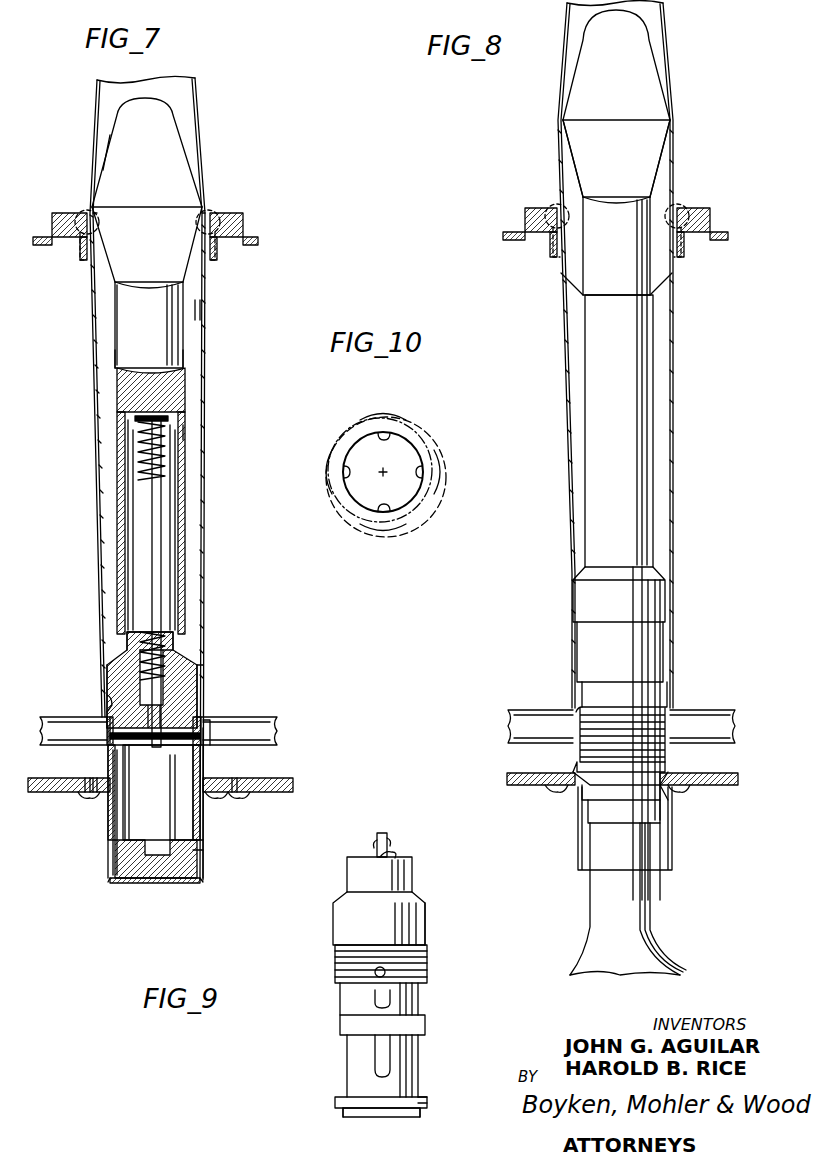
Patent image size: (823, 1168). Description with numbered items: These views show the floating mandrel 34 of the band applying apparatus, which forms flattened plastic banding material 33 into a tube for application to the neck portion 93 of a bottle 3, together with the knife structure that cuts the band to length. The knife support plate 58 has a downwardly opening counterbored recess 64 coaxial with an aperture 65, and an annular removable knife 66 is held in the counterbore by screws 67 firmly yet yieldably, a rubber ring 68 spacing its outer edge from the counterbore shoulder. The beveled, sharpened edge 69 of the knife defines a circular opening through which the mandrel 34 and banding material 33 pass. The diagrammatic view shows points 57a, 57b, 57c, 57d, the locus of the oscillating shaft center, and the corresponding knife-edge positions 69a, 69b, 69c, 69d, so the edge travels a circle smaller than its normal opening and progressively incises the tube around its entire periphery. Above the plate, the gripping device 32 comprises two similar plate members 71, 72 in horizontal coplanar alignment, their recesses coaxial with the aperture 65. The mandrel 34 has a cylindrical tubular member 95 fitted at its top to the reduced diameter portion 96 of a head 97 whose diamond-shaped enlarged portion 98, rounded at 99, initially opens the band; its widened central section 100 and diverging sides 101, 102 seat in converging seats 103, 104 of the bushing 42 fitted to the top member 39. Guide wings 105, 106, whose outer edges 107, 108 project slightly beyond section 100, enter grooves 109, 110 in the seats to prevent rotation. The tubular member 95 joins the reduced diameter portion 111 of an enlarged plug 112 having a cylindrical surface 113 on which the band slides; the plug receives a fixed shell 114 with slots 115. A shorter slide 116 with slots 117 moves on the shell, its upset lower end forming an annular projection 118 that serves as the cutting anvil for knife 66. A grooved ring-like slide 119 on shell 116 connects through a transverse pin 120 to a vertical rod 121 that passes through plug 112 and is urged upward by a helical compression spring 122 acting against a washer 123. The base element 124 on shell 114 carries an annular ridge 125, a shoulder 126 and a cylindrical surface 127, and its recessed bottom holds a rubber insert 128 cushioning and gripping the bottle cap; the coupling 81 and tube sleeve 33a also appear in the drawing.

In FIG. 8, the bottle 3 is at (692, 950).
In FIG. 7, the gripping device 32 is at (281, 736).
In FIG. 7, the banding material 33 is at (205, 500).
In FIG. 8, the banding material 33 is at (675, 360).
In FIG. 8, the tube sleeve 33a is at (575, 858).
In FIG. 7, the mandrel 34 is at (196, 472).
In FIG. 7, the top member 39 is at (258, 241).
In FIG. 7, the bushing 42 is at (243, 222).
In FIG. 7, the plate 58 is at (35, 782).
In FIG. 8, the plate 58 is at (622, 782).
In FIG. 7, the counterbored recess 64 is at (85, 780).
In FIG. 7, the aperture 65 is at (97, 780).
In FIG. 7, the knife 66 is at (85, 796).
In FIG. 7, the screws 67 is at (240, 793).
In FIG. 7, the ring of resilient material 68 is at (248, 795).
In FIG. 7, the sharpened edge 69 is at (208, 793).
In FIG. 10, the arc 69a is at (392, 522).
In FIG. 10, the arc 69b is at (350, 470).
In FIG. 10, the arc 69c is at (393, 437).
In FIG. 10, the arc 69d is at (420, 468).
In FIG. 10, the point 57a is at (388, 452).
In FIG. 10, the point 57b is at (397, 475).
In FIG. 10, the point 57c is at (392, 497).
In FIG. 10, the point 57d is at (372, 480).
In FIG. 7, the plate member 71 is at (258, 718).
In FIG. 8, the plate member 71 is at (702, 726).
In FIG. 7, the plate member 72 is at (52, 725).
In FIG. 8, the plate member 72 is at (540, 726).
In FIG. 7, the coupling 81 is at (212, 718).
In FIG. 8, the neck portion 93 is at (600, 870).
In FIG. 7, the cylindrical tubular member 95 is at (118, 508).
In FIG. 7, the reduced diameter portion 96 is at (135, 392).
In FIG. 7, the head 97 is at (115, 340).
In FIG. 7, the enlarged portion 98 is at (115, 185).
In FIG. 7, the rounded upper end 99 is at (172, 112).
In FIG. 7, the central section 100 is at (190, 207).
In FIG. 8, the central section 100 is at (657, 112).
In FIG. 7, the diverging side 101 is at (100, 262).
In FIG. 8, the diverging side 101 is at (568, 145).
In FIG. 7, the diverging side 102 is at (193, 264).
In FIG. 8, the diverging side 102 is at (662, 150).
In FIG. 7, the converging seat 103 is at (88, 198).
In FIG. 8, the converging seat 103 is at (558, 204).
In FIG. 7, the converging seat 104 is at (212, 200).
In FIG. 8, the converging seat 104 is at (672, 196).
In FIG. 7, the guide wing 105 is at (118, 345).
In FIG. 8, the guide wing 105 is at (618, 382).
In FIG. 7, the guide wing 106 is at (203, 308).
In FIG. 7, the outer edge 107 is at (93, 316).
In FIG. 7, the outer edge 108 is at (203, 345).
In FIG. 8, the groove 109 is at (558, 262).
In FIG. 8, the groove 110 is at (677, 262).
In FIG. 7, the reduced diameter portion 111 is at (125, 645).
In FIG. 9, the reduced diameter portion 111 is at (379, 874).
In FIG. 7, the plug 112 is at (112, 676).
In FIG. 8, the plug 112 is at (590, 605).
In FIG. 9, the plug 112 is at (343, 918).
In FIG. 7, the cylindrical surface 113 is at (200, 651).
In FIG. 9, the cylindrical surface 113 is at (426, 920).
In FIG. 7, the shell member 114 is at (205, 843).
In FIG. 8, the shell member 114 is at (617, 654).
In FIG. 9, the shell member 114 is at (414, 1068).
In FIG. 7, the slot 115 is at (128, 828).
In FIG. 9, the slot 115 is at (390, 1052).
In FIG. 7, the slide 116 is at (108, 700).
In FIG. 8, the slide 116 is at (597, 694).
In FIG. 9, the slide 116 is at (392, 1002).
In FIG. 7, the slot 117 is at (125, 760).
In FIG. 9, the slot 117 is at (395, 1000).
In FIG. 7, the annular projection 118 is at (113, 805).
In FIG. 8, the annular projection 118 is at (590, 761).
In FIG. 9, the annular projection 118 is at (345, 1024).
In FIG. 7, the ring-like element 119 is at (212, 745).
In FIG. 8, the ring-like element 119 is at (668, 748).
In FIG. 9, the ring-like element 119 is at (428, 968).
In FIG. 7, the transverse pin 120 is at (190, 750).
In FIG. 9, the transverse pin 120 is at (375, 970).
In FIG. 7, the vertical rod 121 is at (160, 552).
In FIG. 9, the vertical rod 121 is at (388, 845).
In FIG. 7, the helical compression spring 122 is at (140, 455).
In FIG. 9, the helical compression spring 122 is at (370, 847).
In FIG. 7, the washer 123 is at (168, 420).
In FIG. 7, the base element 124 is at (125, 856).
In FIG. 9, the base element 124 is at (345, 1098).
In FIG. 7, the annular ridge 125 is at (200, 852).
In FIG. 8, the annular ridge 125 is at (590, 792).
In FIG. 9, the annular ridge 125 is at (424, 1104).
In FIG. 7, the annular shoulder 126 is at (112, 880).
In FIG. 8, the annular shoulder 126 is at (670, 805).
In FIG. 9, the annular shoulder 126 is at (424, 1112).
In FIG. 7, the cylindrical surface 127 is at (200, 884).
In FIG. 8, the cylindrical surface 127 is at (583, 800).
In FIG. 9, the cylindrical surface 127 is at (343, 1110).
In FIG. 7, the rubber insert 128 is at (165, 885).
In FIG. 9, the rubber insert 128 is at (392, 1118).